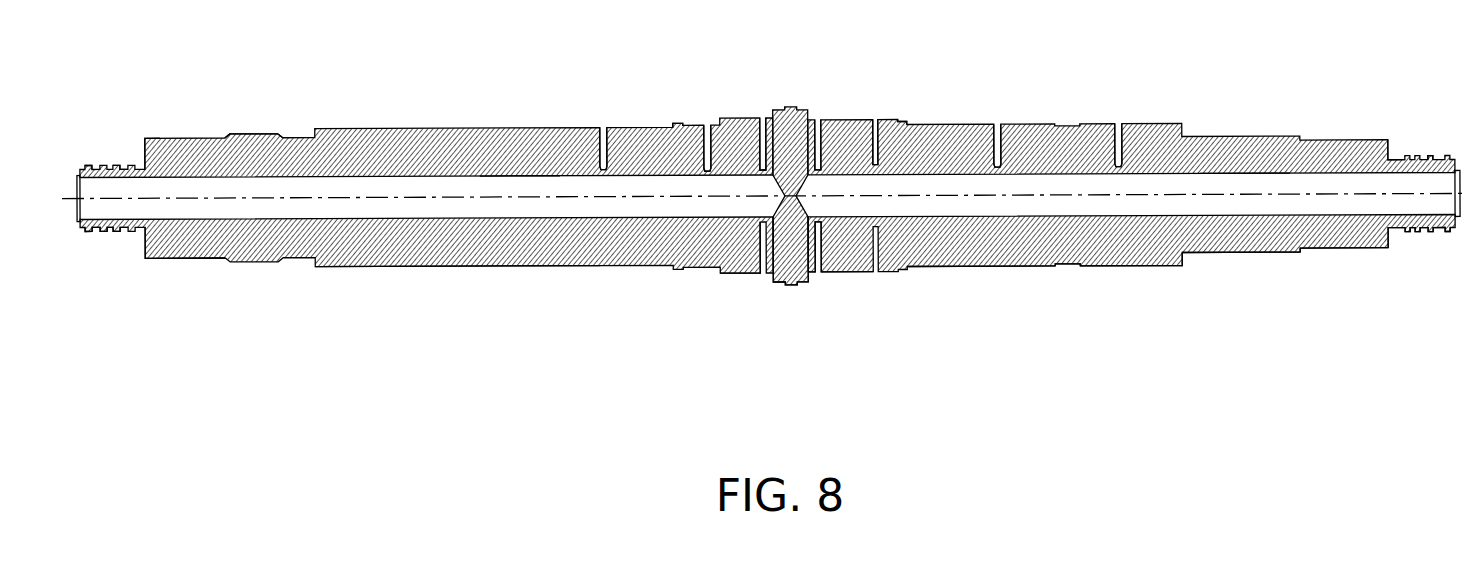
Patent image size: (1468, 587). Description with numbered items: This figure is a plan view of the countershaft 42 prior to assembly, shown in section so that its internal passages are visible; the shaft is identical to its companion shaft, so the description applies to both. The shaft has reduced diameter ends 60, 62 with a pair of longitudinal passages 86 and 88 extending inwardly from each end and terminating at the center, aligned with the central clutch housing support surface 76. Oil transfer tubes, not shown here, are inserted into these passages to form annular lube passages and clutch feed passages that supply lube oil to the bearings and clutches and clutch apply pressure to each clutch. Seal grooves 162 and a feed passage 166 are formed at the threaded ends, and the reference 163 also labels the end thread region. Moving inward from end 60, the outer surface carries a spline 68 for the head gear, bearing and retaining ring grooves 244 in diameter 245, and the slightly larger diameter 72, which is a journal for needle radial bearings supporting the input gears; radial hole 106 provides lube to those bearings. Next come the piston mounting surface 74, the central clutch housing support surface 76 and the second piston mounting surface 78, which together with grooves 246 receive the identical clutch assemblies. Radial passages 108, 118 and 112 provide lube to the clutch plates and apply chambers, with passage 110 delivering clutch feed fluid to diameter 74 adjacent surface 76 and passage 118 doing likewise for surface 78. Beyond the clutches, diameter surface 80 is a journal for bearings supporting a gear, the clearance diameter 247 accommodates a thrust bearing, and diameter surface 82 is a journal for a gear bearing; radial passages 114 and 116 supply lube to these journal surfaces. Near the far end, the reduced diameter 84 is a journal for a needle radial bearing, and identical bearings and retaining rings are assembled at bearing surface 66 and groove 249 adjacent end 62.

The countershaft 42 is at (600, 290).
The reduced diameter end 60 is at (127, 163).
The reduced diameter end 62 is at (1398, 231).
The bearing surface 66 is at (1345, 250).
The spline portion 68 is at (245, 132).
The slightly larger diameter portion 72 is at (460, 266).
The piston mounting surface 74 is at (735, 276).
The central clutch housing support surface 76 is at (803, 283).
The piston mounting surface 78 is at (834, 277).
The constant diameter surface 80 is at (965, 266).
The constant diameter surface 82 is at (1150, 266).
The reduced diameter surface 84 is at (1263, 254).
The longitudinal passage 86 is at (522, 176).
The longitudinal passage 88 is at (1244, 176).
The radial fluid passage 106 is at (602, 127).
The radial fluid passage 108 is at (707, 125).
The radial passage 110 is at (763, 118).
The radial passage 112 is at (880, 120).
The radial passage 114 is at (996, 125).
The radial passage 116 is at (1118, 125).
The radial passage 118 is at (820, 120).
The seal grooves 162 is at (91, 232).
The external threads 163 is at (1413, 230).
The feed passage 166 is at (104, 164).
The grooves 244 is at (152, 136).
The diameter 245 is at (197, 258).
The grooves 246 is at (680, 123).
The clearance diameter 247 is at (1068, 266).
The groove 249 is at (1392, 250).